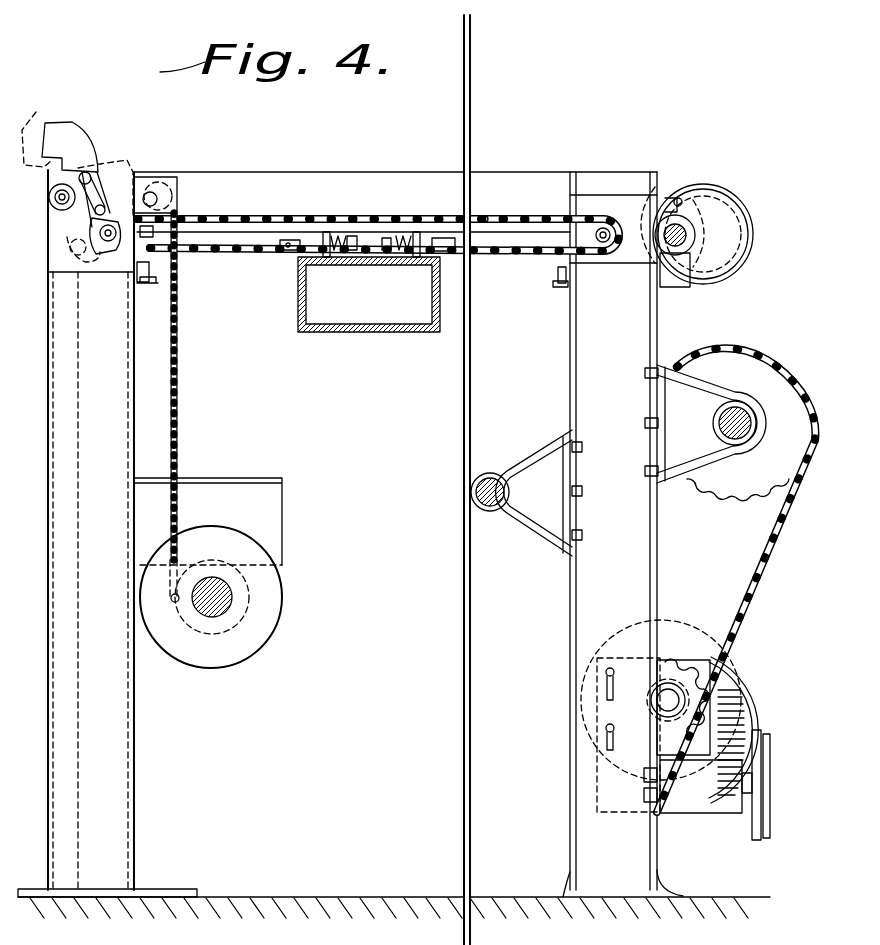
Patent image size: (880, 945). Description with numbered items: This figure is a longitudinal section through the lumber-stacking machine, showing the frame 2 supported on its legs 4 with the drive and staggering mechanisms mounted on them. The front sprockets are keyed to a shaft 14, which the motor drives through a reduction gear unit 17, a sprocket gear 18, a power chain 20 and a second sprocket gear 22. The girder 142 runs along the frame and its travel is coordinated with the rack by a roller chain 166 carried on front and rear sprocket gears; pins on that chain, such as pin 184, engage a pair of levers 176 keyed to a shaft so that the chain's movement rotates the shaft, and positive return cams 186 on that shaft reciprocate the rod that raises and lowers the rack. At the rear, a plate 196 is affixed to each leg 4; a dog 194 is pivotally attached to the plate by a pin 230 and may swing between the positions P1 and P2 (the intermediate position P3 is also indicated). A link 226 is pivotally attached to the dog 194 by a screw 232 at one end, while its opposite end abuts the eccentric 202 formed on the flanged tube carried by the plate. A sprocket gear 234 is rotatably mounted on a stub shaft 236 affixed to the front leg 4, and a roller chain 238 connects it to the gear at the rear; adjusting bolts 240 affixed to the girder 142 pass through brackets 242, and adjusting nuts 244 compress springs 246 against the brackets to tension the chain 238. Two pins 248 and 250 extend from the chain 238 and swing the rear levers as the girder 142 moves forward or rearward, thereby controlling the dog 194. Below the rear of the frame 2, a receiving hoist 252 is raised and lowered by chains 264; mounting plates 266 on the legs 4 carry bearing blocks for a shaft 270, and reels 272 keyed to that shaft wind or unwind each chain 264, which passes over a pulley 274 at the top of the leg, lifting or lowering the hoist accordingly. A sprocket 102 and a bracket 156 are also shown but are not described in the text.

The frame 2 is at (532, 185).
The legs 4 is at (585, 393).
The shaft 14 is at (728, 430).
The reduction gear unit 17 is at (663, 626).
The sprocket gear 18 is at (668, 665).
The power chain 20 is at (733, 633).
The sprocket gear 22 is at (745, 480).
The sprocket bracket 102 is at (490, 505).
The girder 142 is at (368, 333).
The post block 156 is at (654, 265).
The roller chain 166 is at (693, 203).
The levers 176 is at (690, 284).
The pin 184 is at (678, 198).
The positive return cams 186 is at (745, 222).
The dogs 194 is at (73, 150).
The plate 196 is at (65, 262).
The eccentric 202 is at (103, 255).
The link 226 is at (103, 208).
The pin 230 is at (75, 210).
The screw 232 is at (80, 170).
The sprocket gear 234 is at (606, 277).
The stub shaft 236 is at (607, 245).
The roller chain 238 is at (278, 222).
The adjusting bolts 240 is at (308, 240).
The brackets 242 is at (440, 258).
The adjusting nuts 244 is at (388, 238).
The springs 246 is at (410, 237).
The pin 248 is at (487, 216).
The pin 250 is at (178, 252).
The receiving hoist 252 is at (298, 262).
The chain 264 is at (180, 435).
The mounting plates 266 is at (258, 518).
The shaft 270 is at (233, 610).
The reels 272 is at (232, 652).
The pulley 274 is at (165, 198).
The position P1 is at (25, 132).
The position P2 is at (133, 170).
The position P3 is at (50, 133).